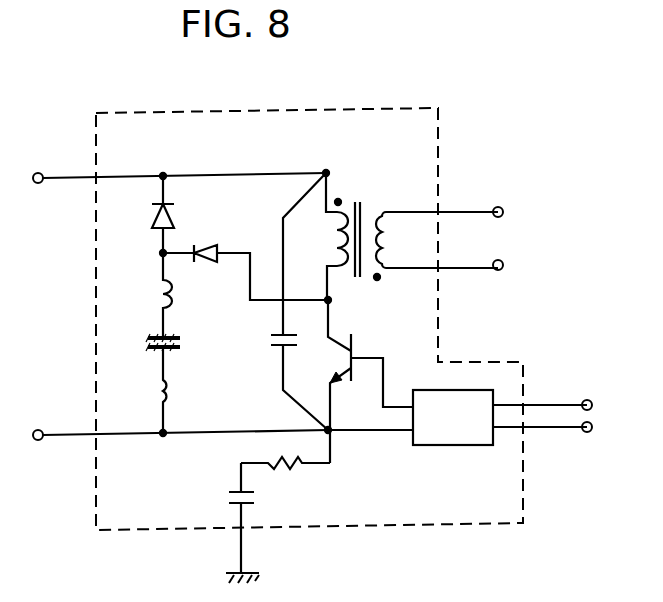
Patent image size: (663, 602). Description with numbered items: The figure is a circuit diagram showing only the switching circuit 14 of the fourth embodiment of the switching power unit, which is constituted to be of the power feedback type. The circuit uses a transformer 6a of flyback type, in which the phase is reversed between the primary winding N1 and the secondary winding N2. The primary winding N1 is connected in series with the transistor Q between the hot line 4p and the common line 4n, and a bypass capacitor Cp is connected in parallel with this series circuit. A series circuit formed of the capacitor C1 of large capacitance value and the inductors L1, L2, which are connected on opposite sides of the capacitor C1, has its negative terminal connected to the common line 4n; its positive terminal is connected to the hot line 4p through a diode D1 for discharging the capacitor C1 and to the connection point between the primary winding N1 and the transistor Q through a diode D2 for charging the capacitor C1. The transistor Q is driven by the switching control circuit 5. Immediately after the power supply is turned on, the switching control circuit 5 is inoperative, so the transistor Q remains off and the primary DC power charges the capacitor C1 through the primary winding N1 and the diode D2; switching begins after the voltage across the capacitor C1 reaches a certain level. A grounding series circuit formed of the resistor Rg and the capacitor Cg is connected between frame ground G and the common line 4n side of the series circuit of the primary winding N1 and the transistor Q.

The switching circuit 14 is at (287, 108).
The hot line 4p is at (72, 175).
The common line 4n is at (68, 440).
The transformer 6a is at (396, 227).
The switching control circuit 5 is at (450, 445).
The diode D1 is at (143, 213).
The diode D2 is at (244, 274).
The inductor L1 is at (143, 295).
The capacitor C1 is at (145, 348).
The inductor L2 is at (141, 392).
The bypass capacitor Cp is at (283, 300).
The transistor Q is at (361, 380).
The primary winding N1 is at (318, 236).
The secondary winding N2 is at (439, 238).
The resistor Rg is at (285, 480).
The capacitor Cg is at (227, 518).
The frame ground G is at (256, 576).